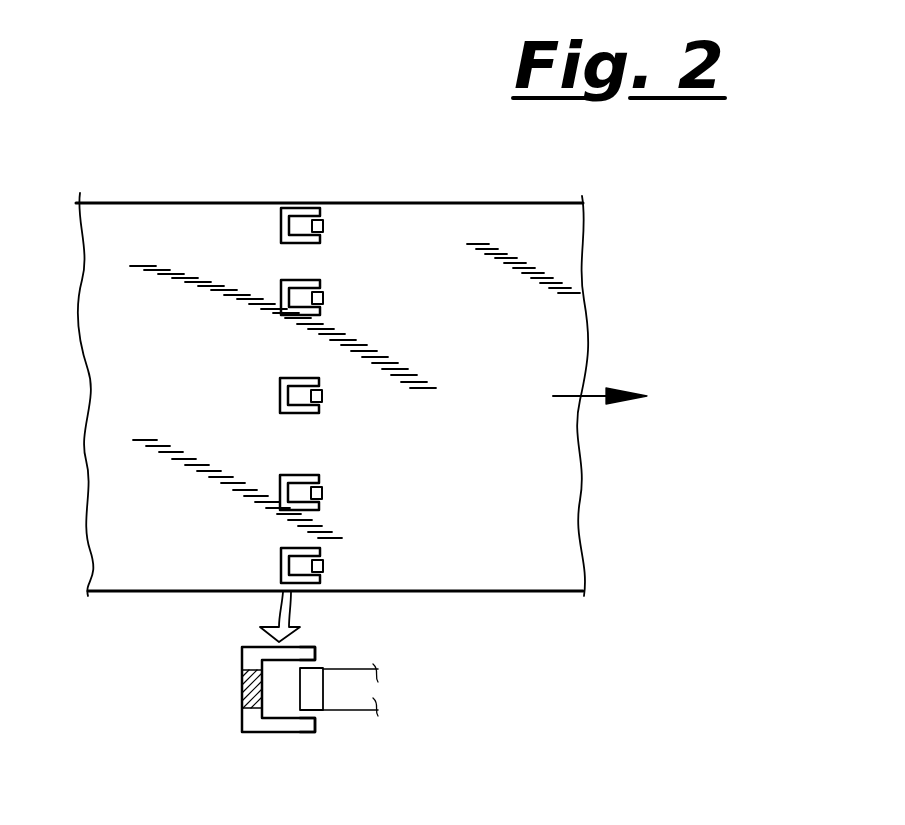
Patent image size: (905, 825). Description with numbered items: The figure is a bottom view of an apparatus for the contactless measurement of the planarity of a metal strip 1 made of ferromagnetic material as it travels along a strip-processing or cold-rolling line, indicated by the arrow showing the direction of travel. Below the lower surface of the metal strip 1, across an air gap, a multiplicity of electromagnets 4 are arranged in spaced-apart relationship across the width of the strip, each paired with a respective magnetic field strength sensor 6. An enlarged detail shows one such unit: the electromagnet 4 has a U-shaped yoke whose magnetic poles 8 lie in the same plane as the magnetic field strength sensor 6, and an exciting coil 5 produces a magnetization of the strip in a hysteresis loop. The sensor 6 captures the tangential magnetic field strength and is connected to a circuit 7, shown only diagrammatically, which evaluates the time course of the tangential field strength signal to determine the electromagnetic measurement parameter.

The metal strip 1 is at (390, 235).
The electromagnet 4 is at (284, 548).
The exciting coil 5 is at (242, 685).
The magnetic field strength sensor 6 is at (323, 228).
The circuit 7 is at (358, 669).
The magnetic poles 8 is at (308, 655).